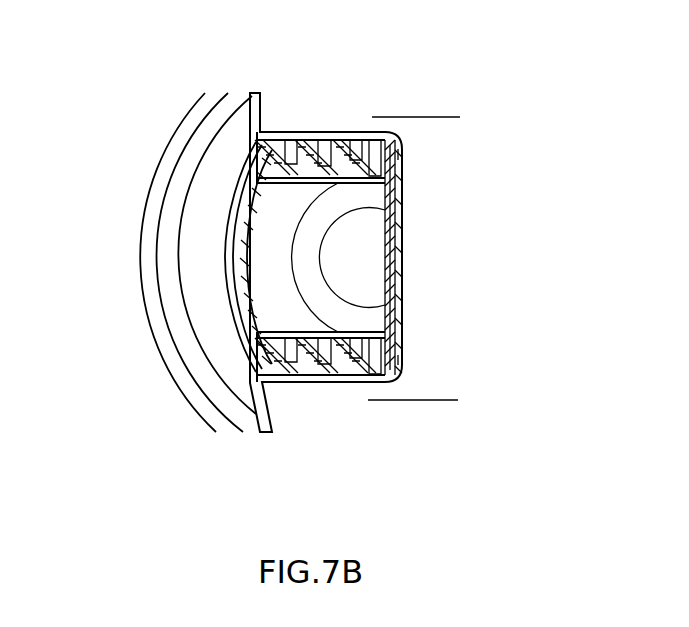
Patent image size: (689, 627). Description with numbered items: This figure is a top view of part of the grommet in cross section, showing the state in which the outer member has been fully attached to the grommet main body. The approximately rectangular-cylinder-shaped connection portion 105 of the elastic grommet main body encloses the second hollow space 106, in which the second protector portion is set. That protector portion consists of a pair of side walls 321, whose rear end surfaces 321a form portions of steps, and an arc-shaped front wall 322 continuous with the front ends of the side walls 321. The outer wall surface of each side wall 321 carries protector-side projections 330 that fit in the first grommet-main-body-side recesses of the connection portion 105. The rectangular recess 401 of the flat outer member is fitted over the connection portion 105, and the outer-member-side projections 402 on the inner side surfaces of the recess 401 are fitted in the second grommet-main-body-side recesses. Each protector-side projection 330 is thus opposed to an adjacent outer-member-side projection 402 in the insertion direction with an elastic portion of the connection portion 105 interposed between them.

The connection portion 105 is at (258, 160).
The second hollow space 106 is at (268, 225).
The front wall 322 is at (238, 287).
The protector-side projection 330 is at (369, 132).
The side wall 321 is at (365, 332).
The rear end surface 321a is at (402, 157).
The recess 401 is at (393, 200).
The outer-member-side projection 402 is at (262, 186).